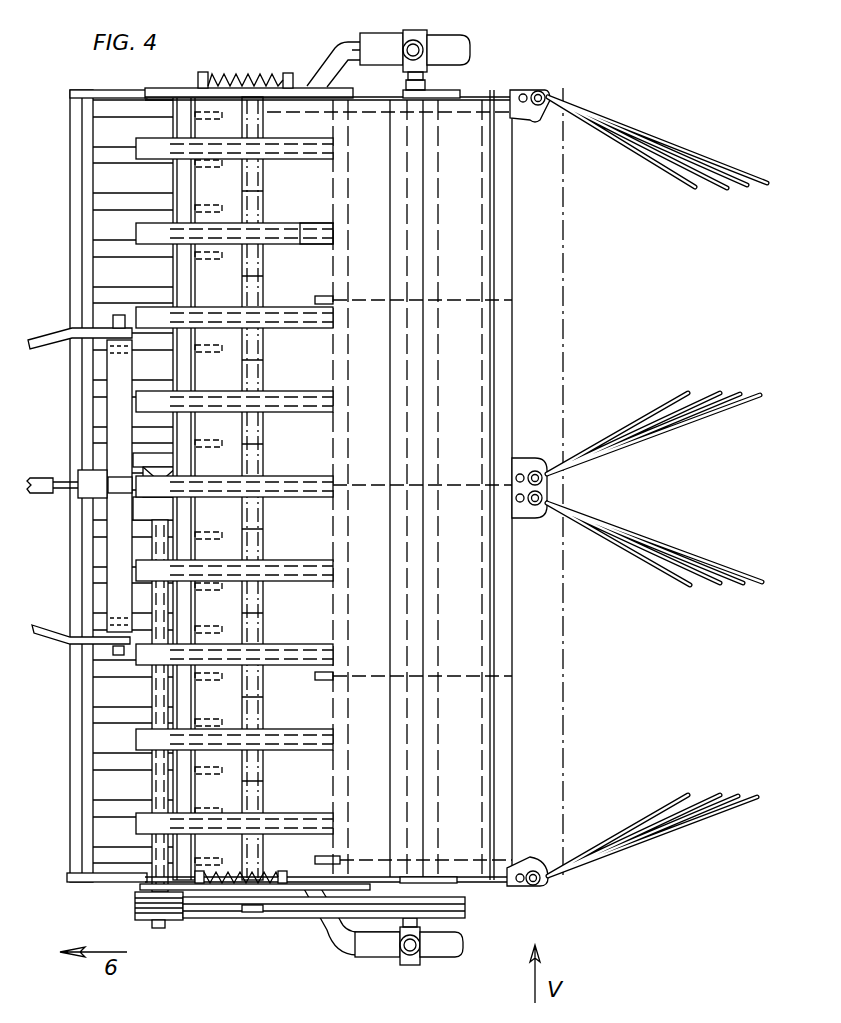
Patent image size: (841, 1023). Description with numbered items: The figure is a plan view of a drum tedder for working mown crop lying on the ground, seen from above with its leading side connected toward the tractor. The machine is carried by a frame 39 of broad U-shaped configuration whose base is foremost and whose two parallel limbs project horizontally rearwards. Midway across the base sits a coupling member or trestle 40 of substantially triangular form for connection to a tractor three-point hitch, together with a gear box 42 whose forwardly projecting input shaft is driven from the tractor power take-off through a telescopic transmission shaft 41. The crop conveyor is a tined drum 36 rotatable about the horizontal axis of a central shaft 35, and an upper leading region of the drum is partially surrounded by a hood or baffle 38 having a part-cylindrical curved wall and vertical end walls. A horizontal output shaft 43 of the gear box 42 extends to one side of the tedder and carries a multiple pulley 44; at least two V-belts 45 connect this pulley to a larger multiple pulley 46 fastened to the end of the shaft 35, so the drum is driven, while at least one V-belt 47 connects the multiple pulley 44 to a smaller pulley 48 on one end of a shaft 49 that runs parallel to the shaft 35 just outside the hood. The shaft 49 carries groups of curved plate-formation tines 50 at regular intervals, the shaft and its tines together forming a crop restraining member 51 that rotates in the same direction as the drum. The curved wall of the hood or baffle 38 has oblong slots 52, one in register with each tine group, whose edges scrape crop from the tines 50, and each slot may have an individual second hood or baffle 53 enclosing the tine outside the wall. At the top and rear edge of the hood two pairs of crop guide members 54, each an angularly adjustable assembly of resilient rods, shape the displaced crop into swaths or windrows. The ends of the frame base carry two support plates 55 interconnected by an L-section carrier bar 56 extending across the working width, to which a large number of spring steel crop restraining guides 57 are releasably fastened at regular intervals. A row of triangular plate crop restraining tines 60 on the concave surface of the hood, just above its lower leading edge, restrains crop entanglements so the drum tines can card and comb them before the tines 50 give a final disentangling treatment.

The central shaft 35 is at (427, 75).
The tined drum 36 is at (575, 718).
The hood or baffle 38 is at (498, 597).
The frame 39 is at (173, 272).
The coupling member or trestle 40 is at (107, 548).
The telescopic transmission shaft 41 is at (52, 478).
The gear box 42 is at (185, 462).
The output shaft 43 is at (160, 928).
The multiple pulley 44 is at (140, 919).
The V-belts 45 is at (298, 918).
The larger multiple pulley 46 is at (465, 915).
The V-belt 47 is at (207, 900).
The smaller pulley 48 is at (262, 895).
The shaft 49 is at (248, 912).
The tines 50 is at (298, 559).
The crop restraining member 51 is at (345, 241).
The slots 52 is at (300, 306).
The second hood or baffle 53 is at (308, 185).
The crop guide members 54 is at (642, 132).
The support plates 55 is at (112, 90).
The carrier bar 56 is at (70, 795).
The crop restraining guides 57 is at (120, 158).
The crop restraining tines 60 is at (200, 262).